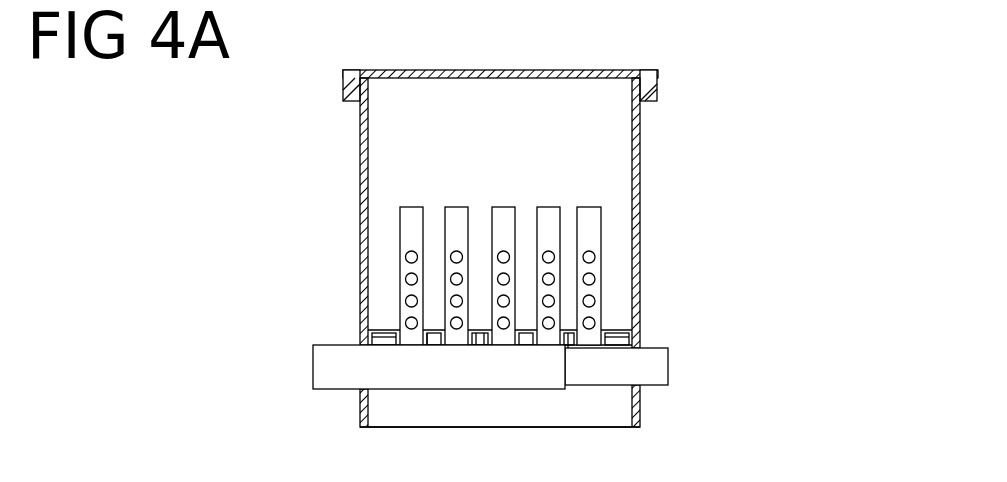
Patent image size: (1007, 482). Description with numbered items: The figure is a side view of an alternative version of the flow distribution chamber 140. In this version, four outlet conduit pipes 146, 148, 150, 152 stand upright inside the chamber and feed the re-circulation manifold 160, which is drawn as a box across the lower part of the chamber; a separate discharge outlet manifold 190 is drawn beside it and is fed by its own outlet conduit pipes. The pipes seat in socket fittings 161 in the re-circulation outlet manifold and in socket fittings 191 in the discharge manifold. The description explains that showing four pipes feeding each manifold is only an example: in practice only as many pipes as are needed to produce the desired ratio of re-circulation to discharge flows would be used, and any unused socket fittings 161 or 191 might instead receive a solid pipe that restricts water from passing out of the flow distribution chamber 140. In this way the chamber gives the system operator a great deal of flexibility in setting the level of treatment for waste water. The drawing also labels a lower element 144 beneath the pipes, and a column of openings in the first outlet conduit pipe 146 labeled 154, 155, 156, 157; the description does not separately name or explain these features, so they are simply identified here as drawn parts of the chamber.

The flow distribution chamber 140 is at (702, 157).
The base plate 144 is at (378, 333).
The outlet conduit pipe 146 is at (411, 213).
The outlet conduit pipe 148 is at (460, 213).
The outlet conduit pipe 150 is at (503, 213).
The outlet conduit pipe 152 is at (549, 213).
The first hole 154 is at (406, 320).
The second hole 155 is at (406, 298).
The third hole 156 is at (406, 275).
The fourth hole 157 is at (406, 253).
The re-circulation manifold 160 is at (347, 375).
The socket fittings 161 is at (427, 340).
The discharge outlet manifold 190 is at (660, 368).
The socket fittings 191 is at (568, 345).